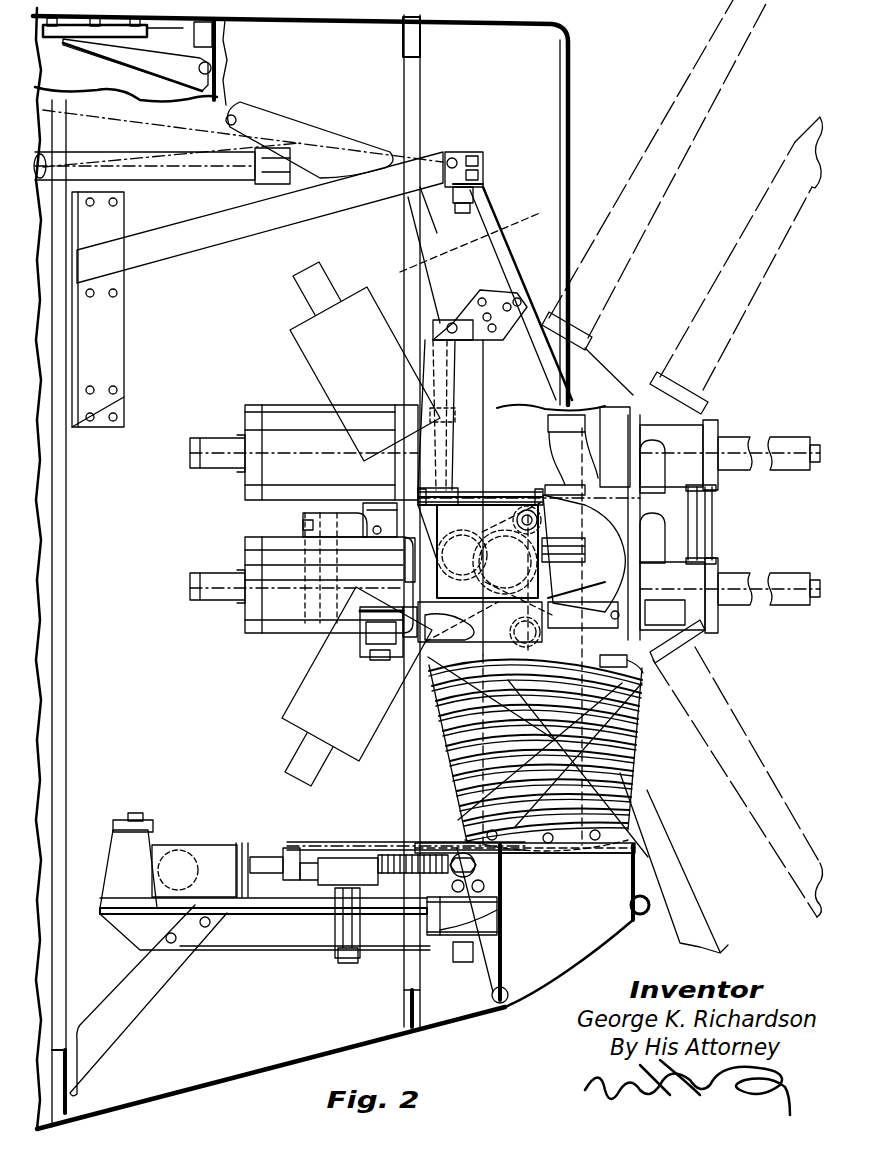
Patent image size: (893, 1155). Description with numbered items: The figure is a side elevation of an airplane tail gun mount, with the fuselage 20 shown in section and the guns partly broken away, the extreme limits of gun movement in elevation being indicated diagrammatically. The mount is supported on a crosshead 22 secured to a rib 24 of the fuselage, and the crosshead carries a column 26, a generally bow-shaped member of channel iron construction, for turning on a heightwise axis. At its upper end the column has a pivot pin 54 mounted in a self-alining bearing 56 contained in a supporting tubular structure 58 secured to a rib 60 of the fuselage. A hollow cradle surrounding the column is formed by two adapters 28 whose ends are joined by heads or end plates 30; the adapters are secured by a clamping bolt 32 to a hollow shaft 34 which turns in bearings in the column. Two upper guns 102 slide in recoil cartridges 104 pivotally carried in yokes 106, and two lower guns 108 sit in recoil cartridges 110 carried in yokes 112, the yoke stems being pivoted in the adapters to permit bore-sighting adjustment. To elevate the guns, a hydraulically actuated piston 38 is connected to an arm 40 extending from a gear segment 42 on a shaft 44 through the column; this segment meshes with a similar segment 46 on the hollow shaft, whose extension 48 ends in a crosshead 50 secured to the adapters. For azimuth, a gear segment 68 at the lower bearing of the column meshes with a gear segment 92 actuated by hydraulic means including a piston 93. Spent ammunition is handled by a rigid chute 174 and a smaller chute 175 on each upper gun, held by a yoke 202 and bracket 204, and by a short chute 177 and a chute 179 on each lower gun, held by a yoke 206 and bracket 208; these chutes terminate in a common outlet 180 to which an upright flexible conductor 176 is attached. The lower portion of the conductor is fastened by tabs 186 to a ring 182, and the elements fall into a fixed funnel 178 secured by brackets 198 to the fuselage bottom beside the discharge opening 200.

The fuselage 20 is at (212, 1078).
The crosshead 22 is at (439, 950).
The rib 24 is at (410, 990).
The column 26 is at (500, 231).
The adapter 28 is at (358, 647).
The head or end plate 30 is at (300, 527).
The clamping bolt 32 is at (497, 492).
The hollow shaft 34 is at (482, 492).
The hydraulically actuated piston 38 is at (430, 402).
The arm 40 is at (425, 700).
The gear segment 42 is at (492, 573).
The shaft 44 is at (584, 628).
The gear segment 46 is at (490, 546).
The extension 48 is at (583, 553).
The crosshead 50 is at (690, 509).
The pivot pin 54 is at (463, 153).
The self-alining bearing 56 is at (483, 168).
The supporting tubular structure 58 is at (363, 183).
The rib 60 is at (60, 355).
The gear segment 68 is at (462, 928).
The gear segment 92 is at (376, 860).
The piston 93 is at (184, 860).
The upper gun 102 is at (304, 452).
The recoil cartridge 104 is at (692, 437).
The yoke 106 is at (655, 484).
The lower gun 108 is at (257, 549).
The recoil cartridge 110 is at (694, 620).
The yoke 112 is at (730, 573).
The rigid chute 174 is at (413, 580).
The rigid chute 175 is at (580, 417).
The flexible conductor 176 is at (638, 758).
The rigid chute 177 is at (412, 690).
The funnel 178 is at (614, 863).
The rigid chute 179 is at (631, 672).
The outlet 180 is at (645, 700).
The ring 182 is at (640, 847).
The tab 186 is at (520, 862).
The bracket 198 is at (648, 897).
The opening 200 is at (552, 969).
The yoke 202 is at (636, 430).
The bracket 204 is at (405, 500).
The yoke 206 is at (670, 608).
The bracket 208 is at (410, 663).